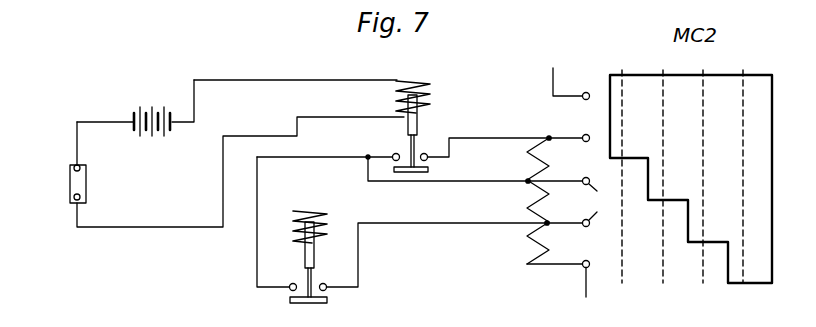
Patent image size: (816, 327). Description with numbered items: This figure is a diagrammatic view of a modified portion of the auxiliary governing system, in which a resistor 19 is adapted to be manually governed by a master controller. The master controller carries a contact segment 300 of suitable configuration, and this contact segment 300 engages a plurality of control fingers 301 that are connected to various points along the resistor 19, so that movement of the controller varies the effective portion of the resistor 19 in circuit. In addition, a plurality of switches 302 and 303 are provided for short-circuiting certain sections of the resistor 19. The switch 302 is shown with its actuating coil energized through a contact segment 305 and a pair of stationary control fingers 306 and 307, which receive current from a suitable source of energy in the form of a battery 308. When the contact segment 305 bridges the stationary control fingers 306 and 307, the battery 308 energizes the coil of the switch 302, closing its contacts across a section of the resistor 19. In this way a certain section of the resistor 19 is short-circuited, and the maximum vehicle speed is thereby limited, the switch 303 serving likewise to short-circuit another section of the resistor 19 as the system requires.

The resistor 19 is at (524, 200).
The contact segment 300 is at (691, 176).
The control fingers 301 is at (603, 202).
The switch 302 is at (439, 126).
The switch 303 is at (335, 253).
The contact segment 305 is at (70, 183).
The stationary control finger 306 is at (80, 167).
The stationary control finger 307 is at (80, 197).
The battery 308 is at (152, 112).